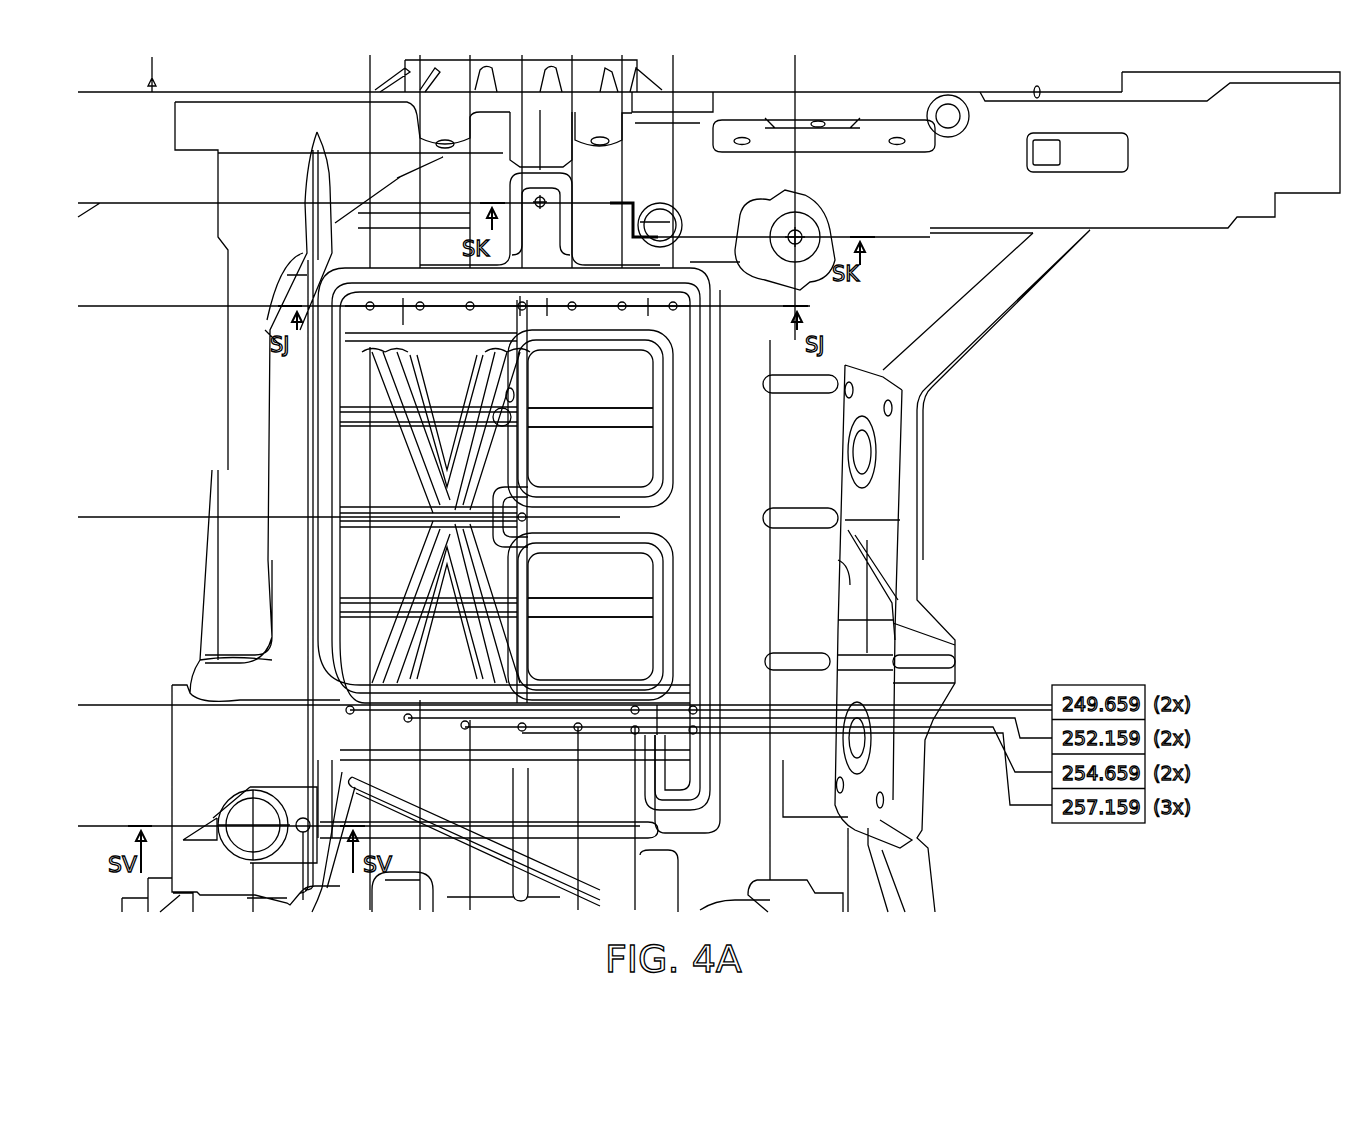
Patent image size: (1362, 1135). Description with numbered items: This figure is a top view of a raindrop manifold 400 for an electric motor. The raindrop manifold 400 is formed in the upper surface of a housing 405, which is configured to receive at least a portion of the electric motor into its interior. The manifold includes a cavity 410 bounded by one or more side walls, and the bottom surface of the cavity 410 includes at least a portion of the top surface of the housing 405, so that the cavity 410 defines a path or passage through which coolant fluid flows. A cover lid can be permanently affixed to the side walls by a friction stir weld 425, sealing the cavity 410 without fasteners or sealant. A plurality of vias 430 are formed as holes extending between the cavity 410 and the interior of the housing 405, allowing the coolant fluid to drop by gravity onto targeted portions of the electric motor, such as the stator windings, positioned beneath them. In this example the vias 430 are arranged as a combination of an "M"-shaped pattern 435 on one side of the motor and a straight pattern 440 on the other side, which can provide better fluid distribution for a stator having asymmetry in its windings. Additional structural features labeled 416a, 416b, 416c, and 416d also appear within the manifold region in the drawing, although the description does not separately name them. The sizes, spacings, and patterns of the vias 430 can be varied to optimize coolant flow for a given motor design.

The raindrop manifold 400 is at (690, 284).
The housing 405 is at (175, 125).
The cavity 410 is at (690, 487).
The lower cross rib 416a is at (690, 563).
The lower V-shaped strut 416b is at (428, 735).
The upper V-shaped strut 416c is at (450, 320).
The upper cross rib 416d is at (568, 512).
The friction stir weld 425 is at (528, 728).
The vias 430 is at (524, 308).
The "M"-shaped pattern of vias 435 is at (300, 718).
The straight pattern of vias 440 is at (262, 318).